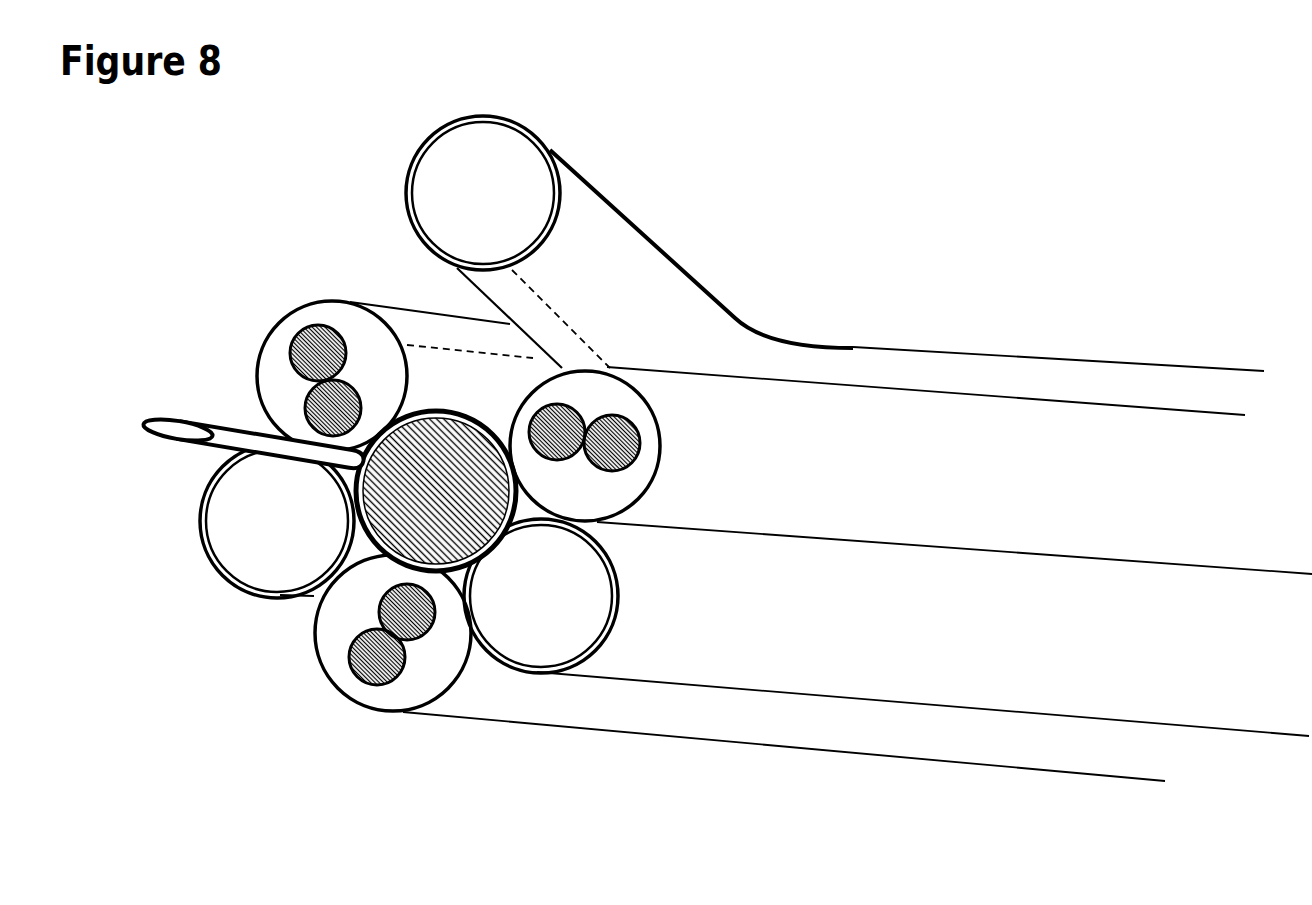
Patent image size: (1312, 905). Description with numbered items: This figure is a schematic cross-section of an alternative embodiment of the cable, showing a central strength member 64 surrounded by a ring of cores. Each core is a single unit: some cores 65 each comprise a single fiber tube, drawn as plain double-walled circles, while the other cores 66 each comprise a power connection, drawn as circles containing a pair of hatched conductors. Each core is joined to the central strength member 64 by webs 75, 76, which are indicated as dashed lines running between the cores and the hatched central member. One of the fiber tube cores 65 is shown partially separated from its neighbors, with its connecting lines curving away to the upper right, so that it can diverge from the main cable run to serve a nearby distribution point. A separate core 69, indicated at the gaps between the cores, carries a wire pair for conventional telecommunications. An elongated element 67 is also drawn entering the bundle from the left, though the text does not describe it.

The central strength member 64 is at (518, 416).
The fiber tube core 65 is at (734, 426).
The power connection core 66 is at (760, 541).
The filler rod 67 is at (251, 442).
The separate core 69 is at (393, 185).
The web 75 is at (563, 319).
The web 76 is at (470, 360).